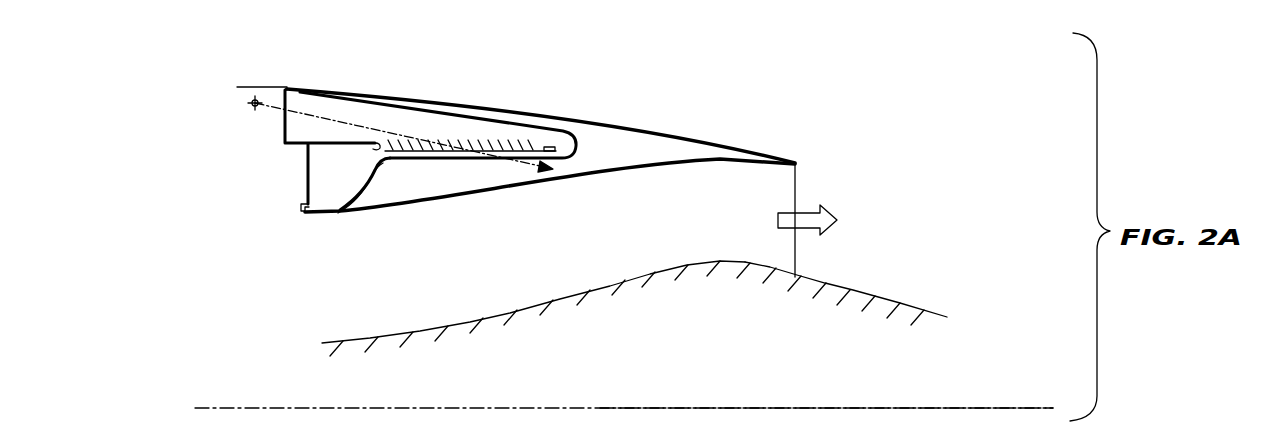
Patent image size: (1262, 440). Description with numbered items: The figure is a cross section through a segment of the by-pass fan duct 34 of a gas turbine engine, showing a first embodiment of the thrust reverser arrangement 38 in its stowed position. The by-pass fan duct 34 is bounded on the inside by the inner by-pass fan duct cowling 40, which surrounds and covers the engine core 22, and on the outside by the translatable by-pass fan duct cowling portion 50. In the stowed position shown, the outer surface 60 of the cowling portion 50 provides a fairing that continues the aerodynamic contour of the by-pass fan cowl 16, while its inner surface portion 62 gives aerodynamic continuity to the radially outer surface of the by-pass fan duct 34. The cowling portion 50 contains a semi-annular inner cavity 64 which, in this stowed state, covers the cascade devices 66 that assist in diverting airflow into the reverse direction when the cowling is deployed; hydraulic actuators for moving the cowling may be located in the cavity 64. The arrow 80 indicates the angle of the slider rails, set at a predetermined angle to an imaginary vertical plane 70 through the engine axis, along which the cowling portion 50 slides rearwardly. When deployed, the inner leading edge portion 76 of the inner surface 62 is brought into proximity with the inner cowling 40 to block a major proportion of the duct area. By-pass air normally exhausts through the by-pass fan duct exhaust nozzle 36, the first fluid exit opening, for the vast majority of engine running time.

The by-pass fan cowl 16 is at (246, 83).
The engine core 22 is at (563, 372).
The by-pass fan duct 34 is at (526, 254).
The by-pass fan duct exhaust nozzle 36 is at (796, 190).
The thrust reverser arrangement 38 is at (594, 78).
The inner by-pass fan duct cowling 40 is at (843, 281).
The translatable by-pass fan duct cowling portion 50 is at (672, 129).
The outer surface 60 is at (425, 95).
The inner surface portion 62 is at (587, 173).
The semi-annular inner cavity 64 is at (364, 118).
The cascade devices 66 is at (481, 133).
The imaginary vertical plane 70 is at (624, 382).
The inner leading edge portion 76 is at (352, 214).
The arrow 80 is at (523, 167).